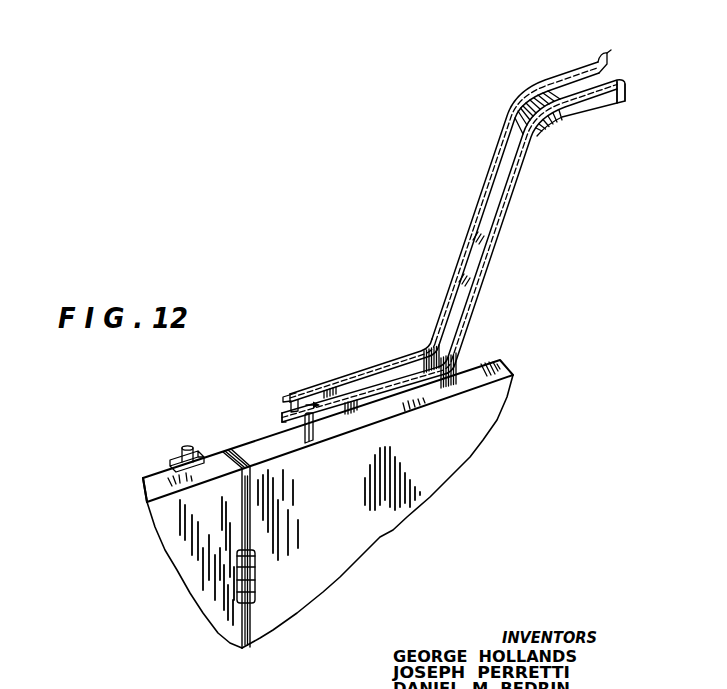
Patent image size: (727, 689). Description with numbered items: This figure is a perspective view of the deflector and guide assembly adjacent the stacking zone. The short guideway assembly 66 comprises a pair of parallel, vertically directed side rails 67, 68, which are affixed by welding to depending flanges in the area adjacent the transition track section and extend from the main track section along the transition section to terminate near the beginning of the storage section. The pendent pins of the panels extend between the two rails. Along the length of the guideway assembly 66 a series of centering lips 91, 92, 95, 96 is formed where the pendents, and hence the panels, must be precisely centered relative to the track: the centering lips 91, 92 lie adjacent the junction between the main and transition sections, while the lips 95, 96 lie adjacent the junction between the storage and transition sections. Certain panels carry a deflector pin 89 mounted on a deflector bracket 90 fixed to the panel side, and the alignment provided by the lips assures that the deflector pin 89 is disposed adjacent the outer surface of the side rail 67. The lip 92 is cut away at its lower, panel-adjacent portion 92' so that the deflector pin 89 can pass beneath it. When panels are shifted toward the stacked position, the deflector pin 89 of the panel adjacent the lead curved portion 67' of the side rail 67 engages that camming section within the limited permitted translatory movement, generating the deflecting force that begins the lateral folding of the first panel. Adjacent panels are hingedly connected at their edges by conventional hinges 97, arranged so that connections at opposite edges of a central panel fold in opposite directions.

The guideway assembly 66 is at (466, 211).
The side rail 67 is at (504, 199).
The lead curved portion of the side rail 67' is at (364, 362).
The side rail 68 is at (480, 300).
The deflector pin 89 is at (186, 446).
The deflector bracket 90 is at (176, 464).
The centering lip 91 is at (314, 437).
The centering lip 92 is at (294, 374).
The lower panel-adjacent portion of the lip 92' is at (257, 413).
The centering lip 95 is at (624, 102).
The centering lip 96 is at (612, 51).
The hinge 97 is at (257, 600).